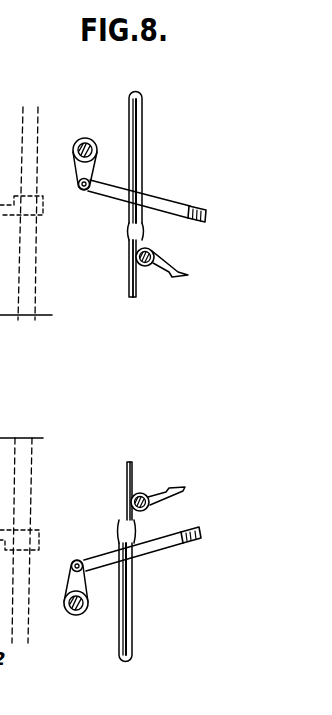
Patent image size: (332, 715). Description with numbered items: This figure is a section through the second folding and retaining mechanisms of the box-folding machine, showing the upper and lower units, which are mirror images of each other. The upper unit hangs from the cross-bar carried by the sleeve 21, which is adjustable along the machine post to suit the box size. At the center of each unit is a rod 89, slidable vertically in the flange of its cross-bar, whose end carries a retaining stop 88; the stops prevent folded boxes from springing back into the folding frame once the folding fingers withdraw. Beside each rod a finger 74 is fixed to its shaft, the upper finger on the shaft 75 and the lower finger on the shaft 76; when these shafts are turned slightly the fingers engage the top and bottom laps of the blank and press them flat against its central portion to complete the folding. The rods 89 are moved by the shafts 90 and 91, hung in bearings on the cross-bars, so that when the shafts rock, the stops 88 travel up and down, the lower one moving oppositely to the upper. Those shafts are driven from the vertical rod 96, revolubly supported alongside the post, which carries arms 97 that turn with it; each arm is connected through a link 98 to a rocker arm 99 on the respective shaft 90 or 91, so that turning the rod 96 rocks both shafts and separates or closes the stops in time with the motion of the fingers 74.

The sleeve 21 is at (11, 81).
The fingers 74 is at (185, 280).
The shaft 75 is at (146, 267).
The shaft 76 is at (146, 493).
The retaining stops 88 is at (130, 280).
The rods 89 is at (143, 110).
The shaft 90 is at (85, 138).
The shaft 91 is at (71, 615).
The vertical rod 96 is at (36, 298).
The arms 97 is at (207, 213).
The links 98 is at (157, 204).
The rocker arms 99 is at (75, 167).